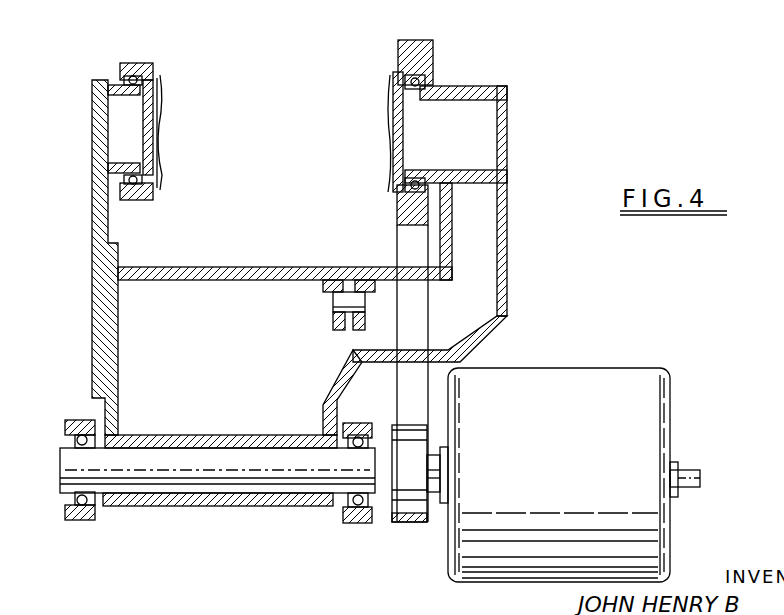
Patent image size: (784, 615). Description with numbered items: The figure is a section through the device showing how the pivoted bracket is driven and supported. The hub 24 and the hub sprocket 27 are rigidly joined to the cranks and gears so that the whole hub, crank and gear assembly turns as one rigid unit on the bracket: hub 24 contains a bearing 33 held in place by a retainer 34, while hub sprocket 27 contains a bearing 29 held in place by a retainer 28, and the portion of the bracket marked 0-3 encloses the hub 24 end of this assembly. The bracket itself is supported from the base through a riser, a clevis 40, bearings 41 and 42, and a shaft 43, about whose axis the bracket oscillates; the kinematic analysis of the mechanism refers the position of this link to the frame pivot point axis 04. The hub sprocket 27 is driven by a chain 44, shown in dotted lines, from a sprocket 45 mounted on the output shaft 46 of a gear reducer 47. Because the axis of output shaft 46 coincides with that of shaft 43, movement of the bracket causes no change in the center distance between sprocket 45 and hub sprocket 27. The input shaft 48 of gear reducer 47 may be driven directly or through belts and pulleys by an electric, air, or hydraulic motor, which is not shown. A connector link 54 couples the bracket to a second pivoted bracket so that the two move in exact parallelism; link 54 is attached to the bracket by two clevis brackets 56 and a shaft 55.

The bearing housing 0-3 is at (100, 140).
The frame pivot point axis 04 is at (196, 470).
The hub 24 is at (137, 67).
The hub sprocket 27 is at (402, 57).
The retainer 28 is at (425, 78).
The bearing 29 is at (412, 100).
The bearing 33 is at (125, 78).
The retainer 34 is at (122, 63).
The clevis 40 is at (85, 522).
The bearing 41 is at (72, 440).
The bearing 42 is at (357, 428).
The shaft 43 is at (60, 487).
The chain 44 is at (420, 42).
The sprocket 45 is at (410, 510).
The output shaft 46 is at (437, 500).
The gear reducer 47 is at (608, 380).
The input shaft 48 is at (700, 478).
The connector link 54 is at (345, 325).
The shaft 55 is at (335, 298).
The clevis brackets 56 is at (333, 318).